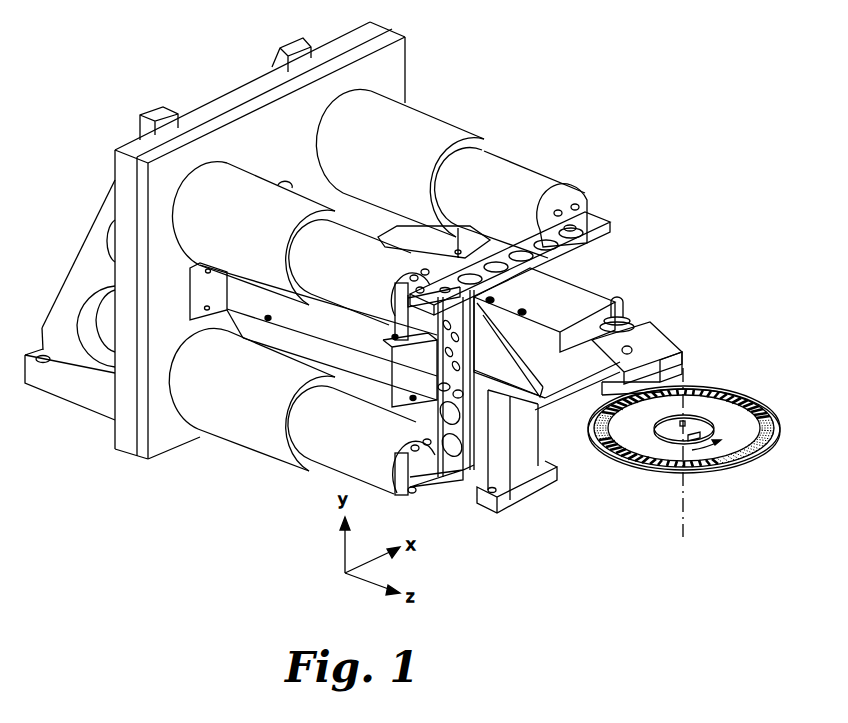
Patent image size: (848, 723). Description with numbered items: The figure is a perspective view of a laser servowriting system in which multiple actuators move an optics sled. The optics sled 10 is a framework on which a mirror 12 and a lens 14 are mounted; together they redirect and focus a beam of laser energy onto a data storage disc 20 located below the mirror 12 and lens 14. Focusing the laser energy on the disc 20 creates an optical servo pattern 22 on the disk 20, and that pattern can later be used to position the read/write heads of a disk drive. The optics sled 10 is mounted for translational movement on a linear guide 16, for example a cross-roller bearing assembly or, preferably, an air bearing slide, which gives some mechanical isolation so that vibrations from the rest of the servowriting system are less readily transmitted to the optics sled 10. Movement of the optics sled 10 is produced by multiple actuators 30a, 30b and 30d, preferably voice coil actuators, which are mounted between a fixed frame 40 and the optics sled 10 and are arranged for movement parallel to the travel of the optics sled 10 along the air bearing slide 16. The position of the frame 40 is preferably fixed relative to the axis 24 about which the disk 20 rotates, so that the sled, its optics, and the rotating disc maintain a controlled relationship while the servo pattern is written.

The fixed frame 40 is at (397, 57).
The actuator 30a is at (212, 166).
The actuator 30b is at (432, 124).
The actuator 30d is at (237, 440).
The linear guide 16 is at (560, 265).
The optics sled 10 is at (583, 298).
The mirror 12 is at (635, 348).
The lens 14 is at (668, 377).
The data storage disc 20 is at (641, 461).
The optical servo pattern 22 is at (727, 387).
The axis 24 is at (685, 527).